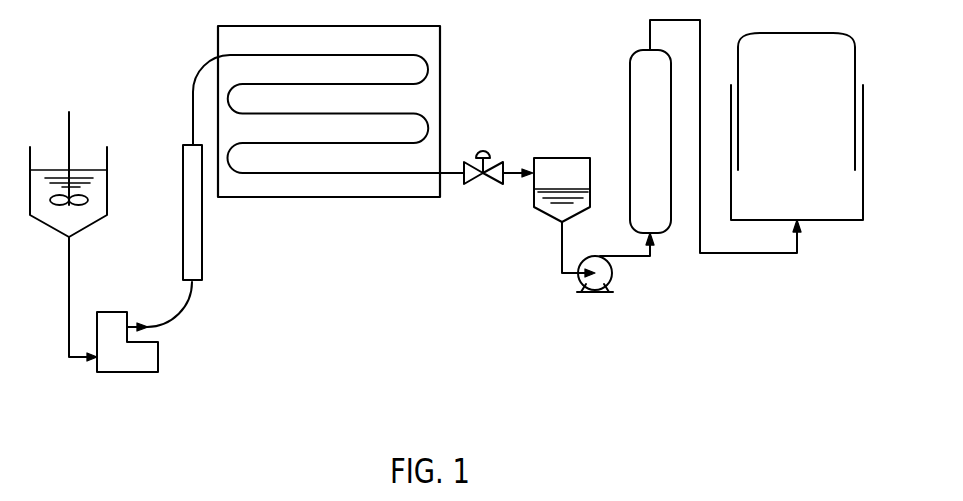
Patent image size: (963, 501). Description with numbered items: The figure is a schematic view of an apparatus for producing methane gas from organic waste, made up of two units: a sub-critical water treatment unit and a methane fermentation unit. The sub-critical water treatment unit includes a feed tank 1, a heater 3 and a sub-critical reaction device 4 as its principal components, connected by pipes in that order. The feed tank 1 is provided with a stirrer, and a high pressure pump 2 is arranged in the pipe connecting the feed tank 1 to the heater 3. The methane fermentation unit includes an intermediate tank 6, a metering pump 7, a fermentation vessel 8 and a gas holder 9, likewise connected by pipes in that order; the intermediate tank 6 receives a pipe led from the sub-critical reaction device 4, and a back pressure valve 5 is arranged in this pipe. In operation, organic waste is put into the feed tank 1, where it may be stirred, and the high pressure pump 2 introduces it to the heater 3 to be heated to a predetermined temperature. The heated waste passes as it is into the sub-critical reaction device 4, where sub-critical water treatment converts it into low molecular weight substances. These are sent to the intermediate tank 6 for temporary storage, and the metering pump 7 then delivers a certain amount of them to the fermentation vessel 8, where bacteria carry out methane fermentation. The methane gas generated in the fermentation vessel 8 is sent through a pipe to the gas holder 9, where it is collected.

The feed tank 1 is at (109, 179).
The high pressure pump 2 is at (158, 355).
The heater 3 is at (183, 237).
The sub-critical reaction device 4 is at (378, 197).
The back pressure valve 5 is at (483, 184).
The intermediate tank 6 is at (566, 158).
The metering pump 7 is at (590, 294).
The fermentation vessel 8 is at (630, 82).
The gas holder 9 is at (863, 181).